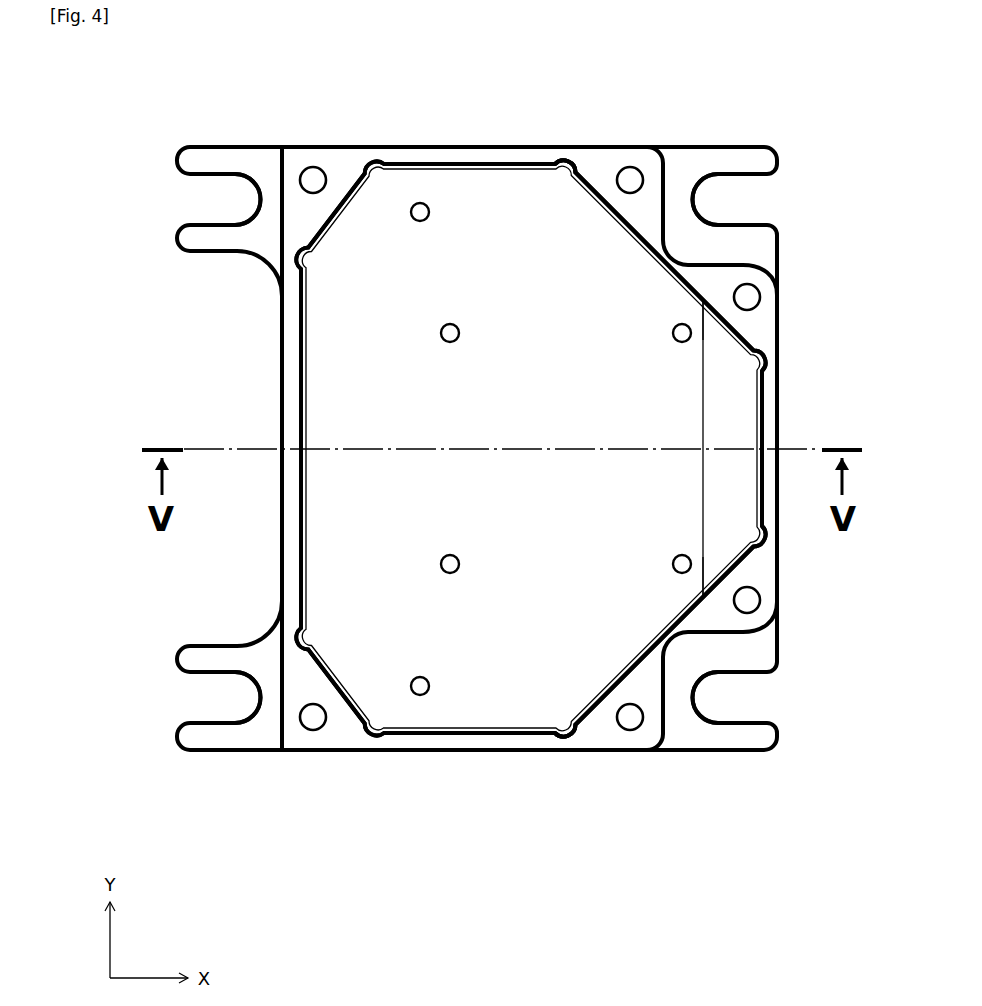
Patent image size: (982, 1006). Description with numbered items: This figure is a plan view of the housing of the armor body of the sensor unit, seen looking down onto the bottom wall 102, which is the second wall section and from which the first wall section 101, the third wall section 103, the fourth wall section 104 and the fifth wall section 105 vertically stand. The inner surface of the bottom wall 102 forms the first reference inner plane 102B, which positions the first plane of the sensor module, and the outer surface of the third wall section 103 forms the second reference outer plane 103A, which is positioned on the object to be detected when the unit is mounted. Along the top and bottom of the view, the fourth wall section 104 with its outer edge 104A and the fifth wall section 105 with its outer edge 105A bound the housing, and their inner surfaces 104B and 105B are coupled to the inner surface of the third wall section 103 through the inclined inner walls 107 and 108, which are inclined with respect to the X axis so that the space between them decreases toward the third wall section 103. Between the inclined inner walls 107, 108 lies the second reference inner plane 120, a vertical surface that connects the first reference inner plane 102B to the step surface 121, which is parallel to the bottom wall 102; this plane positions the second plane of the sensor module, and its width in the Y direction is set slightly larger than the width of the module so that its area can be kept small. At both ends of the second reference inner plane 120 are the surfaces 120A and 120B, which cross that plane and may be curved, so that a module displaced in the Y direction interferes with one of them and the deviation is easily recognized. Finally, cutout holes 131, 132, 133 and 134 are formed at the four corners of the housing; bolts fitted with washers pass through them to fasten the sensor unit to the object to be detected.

The first wall section 101 is at (280, 417).
The bottom wall 102 is at (530, 498).
The first reference inner plane 102B is at (486, 705).
The third wall section 103 is at (788, 516).
The second reference outer plane 103A is at (780, 587).
The fourth wall section 104 is at (502, 132).
The upper side edge 104A is at (448, 147).
The inner surface of the fourth wall section 104B is at (425, 190).
The fifth wall section 105 is at (448, 754).
The lower side edge 105A is at (553, 750).
The inner surface of the fifth wall section 105B is at (408, 722).
The inclined inner wall 107 is at (620, 220).
The inclined inner wall 108 is at (620, 677).
The second reference inner plane 120 is at (772, 382).
The surface crossing the second reference inner plane 120A is at (697, 303).
The surface crossing the second reference inner plane 120B is at (697, 592).
The step surface 121 is at (730, 405).
The cutout hole 131 is at (763, 197).
The cutout hole 132 is at (763, 697).
The cutout hole 133 is at (193, 198).
The cutout hole 134 is at (193, 695).